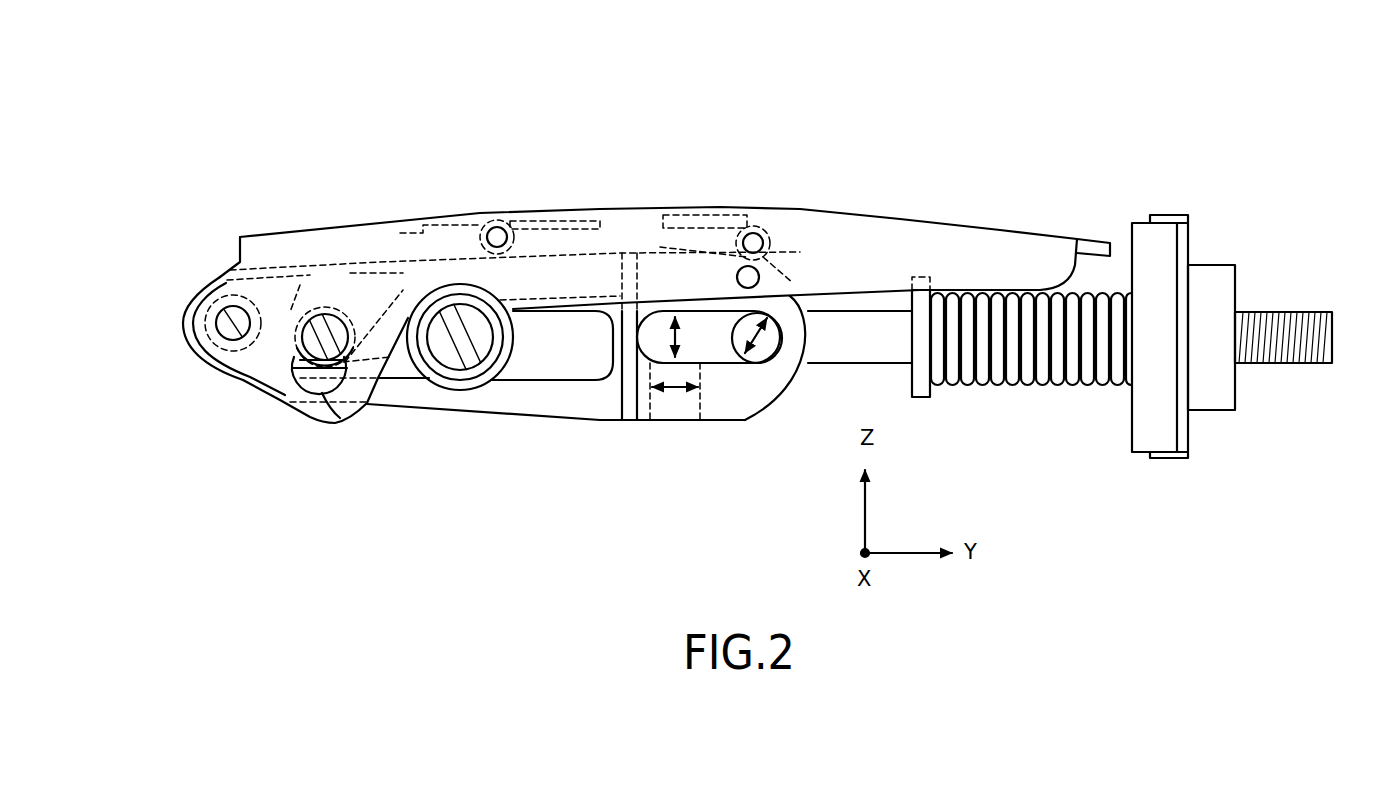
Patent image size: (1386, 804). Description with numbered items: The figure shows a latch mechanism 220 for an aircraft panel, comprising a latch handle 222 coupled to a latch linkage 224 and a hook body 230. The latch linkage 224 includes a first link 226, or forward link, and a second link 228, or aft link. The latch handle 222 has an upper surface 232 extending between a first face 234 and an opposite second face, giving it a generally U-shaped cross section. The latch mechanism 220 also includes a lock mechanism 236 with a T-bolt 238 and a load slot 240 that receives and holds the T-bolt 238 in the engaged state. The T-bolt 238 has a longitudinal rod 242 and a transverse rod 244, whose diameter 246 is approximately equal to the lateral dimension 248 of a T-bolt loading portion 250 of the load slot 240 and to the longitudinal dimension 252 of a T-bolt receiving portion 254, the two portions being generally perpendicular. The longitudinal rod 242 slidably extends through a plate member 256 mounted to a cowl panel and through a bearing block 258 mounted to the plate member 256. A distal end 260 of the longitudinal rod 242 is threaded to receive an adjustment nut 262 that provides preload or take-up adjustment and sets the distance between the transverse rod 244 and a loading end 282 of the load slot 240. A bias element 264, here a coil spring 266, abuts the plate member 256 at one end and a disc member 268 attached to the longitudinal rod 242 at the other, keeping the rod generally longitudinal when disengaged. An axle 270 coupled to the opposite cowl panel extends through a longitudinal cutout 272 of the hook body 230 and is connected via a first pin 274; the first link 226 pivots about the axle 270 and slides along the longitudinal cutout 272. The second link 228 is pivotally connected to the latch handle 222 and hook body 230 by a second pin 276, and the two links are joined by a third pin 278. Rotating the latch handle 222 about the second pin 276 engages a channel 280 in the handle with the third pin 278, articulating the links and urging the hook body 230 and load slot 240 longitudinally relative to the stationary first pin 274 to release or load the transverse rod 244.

The latch mechanism 220 is at (235, 122).
The latch handle 222 is at (855, 215).
The latch linkage 224 is at (222, 385).
The first link 226 is at (360, 290).
The second link 228 is at (255, 290).
The hook body 230 is at (542, 398).
The upper surface 232 is at (942, 222).
The first face 234 is at (1014, 267).
The lock mechanism 236 is at (758, 437).
The T-bolt 238 is at (781, 343).
The load slot 240 is at (710, 345).
The longitudinal rod 242 is at (887, 350).
The transverse rod 244 is at (779, 337).
The diameter 246 is at (753, 316).
The lateral dimension 248 is at (650, 310).
The T-bolt loading portion 250 is at (678, 310).
The longitudinal dimension 252 is at (687, 389).
The T-bolt receiving portion 254 is at (652, 405).
The plate member 256 is at (1142, 423).
The bearing block 258 is at (1185, 437).
The distal end 260 is at (1290, 352).
The adjustment nut 262 is at (1217, 295).
The bias element 264 is at (1038, 367).
The coil spring 266 is at (1080, 363).
The disc member 268 is at (920, 387).
The axle 270 is at (460, 372).
The longitudinal cutout 272 is at (558, 382).
The first pin 274 is at (472, 357).
The second pin 276 is at (221, 328).
The third pin 278 is at (326, 333).
The channel 280 is at (340, 418).
The loading end 282 is at (792, 323).